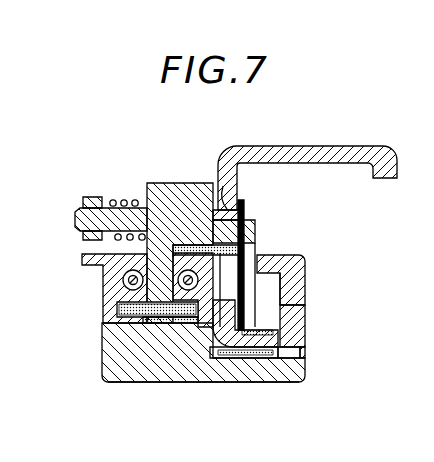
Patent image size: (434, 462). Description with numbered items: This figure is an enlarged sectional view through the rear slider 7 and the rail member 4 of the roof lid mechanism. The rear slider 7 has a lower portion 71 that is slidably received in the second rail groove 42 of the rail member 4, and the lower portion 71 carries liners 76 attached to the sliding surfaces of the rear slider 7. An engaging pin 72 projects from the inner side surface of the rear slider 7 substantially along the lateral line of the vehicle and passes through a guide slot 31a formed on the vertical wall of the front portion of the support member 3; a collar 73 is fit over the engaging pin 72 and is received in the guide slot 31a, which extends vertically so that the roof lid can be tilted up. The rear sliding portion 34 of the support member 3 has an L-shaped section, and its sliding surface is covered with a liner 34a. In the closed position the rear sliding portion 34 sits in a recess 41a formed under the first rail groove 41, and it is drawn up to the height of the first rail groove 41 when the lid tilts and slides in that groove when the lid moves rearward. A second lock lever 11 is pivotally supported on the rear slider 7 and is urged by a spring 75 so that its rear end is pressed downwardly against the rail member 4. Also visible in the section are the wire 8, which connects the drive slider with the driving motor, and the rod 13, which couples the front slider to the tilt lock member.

The support member 3 is at (324, 146).
The rail member 4 is at (304, 251).
The rear slider 7 is at (174, 184).
The wire 8 is at (123, 281).
The second lock lever 11 is at (95, 197).
The rod 13 is at (180, 290).
The guide slot 31a is at (212, 308).
The rear sliding portion 34 is at (217, 350).
The liner 34a is at (280, 329).
The first rail groove 41 is at (279, 302).
The recess 41a is at (258, 383).
The second rail groove 42 is at (126, 380).
The lower portion 71 is at (146, 328).
The engaging pin 72 is at (257, 224).
The collar 73 is at (214, 184).
The spring 75 is at (120, 198).
The liners 76 is at (187, 246).